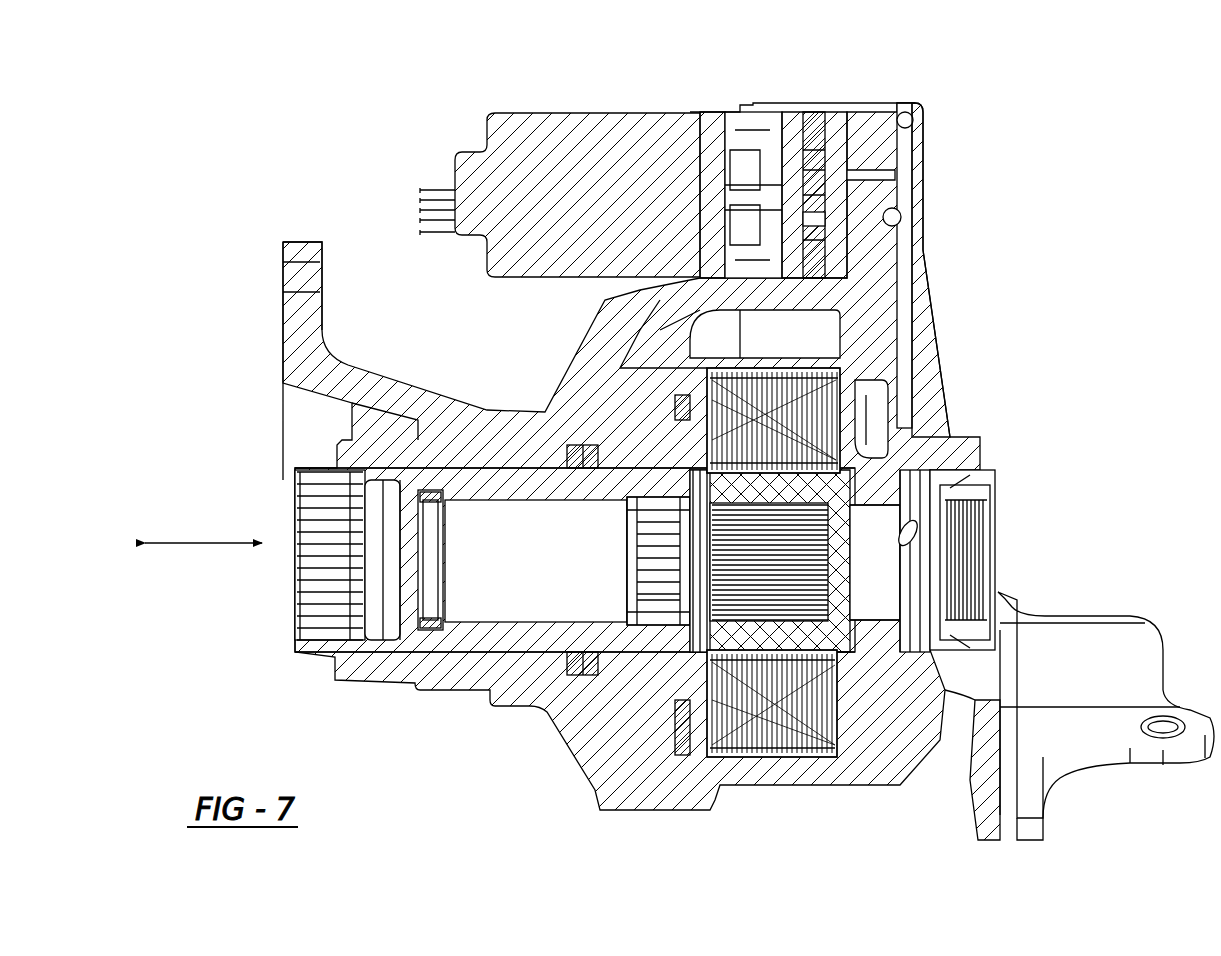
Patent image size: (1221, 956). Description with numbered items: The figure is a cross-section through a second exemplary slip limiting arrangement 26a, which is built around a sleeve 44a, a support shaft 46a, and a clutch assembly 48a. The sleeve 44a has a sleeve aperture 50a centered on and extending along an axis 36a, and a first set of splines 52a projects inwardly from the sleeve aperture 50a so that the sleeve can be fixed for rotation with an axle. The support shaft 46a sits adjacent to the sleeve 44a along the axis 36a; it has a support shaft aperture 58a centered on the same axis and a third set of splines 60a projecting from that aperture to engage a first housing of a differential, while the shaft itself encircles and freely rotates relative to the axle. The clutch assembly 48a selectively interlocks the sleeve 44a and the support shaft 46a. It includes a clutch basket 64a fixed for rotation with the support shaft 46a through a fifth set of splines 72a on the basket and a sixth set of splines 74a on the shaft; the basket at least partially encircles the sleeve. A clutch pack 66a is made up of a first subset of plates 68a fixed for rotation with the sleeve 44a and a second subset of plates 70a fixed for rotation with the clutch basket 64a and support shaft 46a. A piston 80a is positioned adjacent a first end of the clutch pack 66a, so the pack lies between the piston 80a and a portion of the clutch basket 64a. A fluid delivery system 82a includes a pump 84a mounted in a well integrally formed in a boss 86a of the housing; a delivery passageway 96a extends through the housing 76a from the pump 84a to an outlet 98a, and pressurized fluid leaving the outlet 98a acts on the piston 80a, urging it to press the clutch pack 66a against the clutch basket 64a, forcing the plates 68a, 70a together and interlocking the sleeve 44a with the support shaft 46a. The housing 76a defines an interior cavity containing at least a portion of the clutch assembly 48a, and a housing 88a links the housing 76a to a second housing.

The slip limiting arrangement 26a is at (252, 153).
The axis 36a is at (199, 545).
The sleeve 44a is at (880, 488).
The support shaft 46a is at (517, 630).
The clutch assembly 48a is at (689, 445).
The sleeve aperture 50a is at (775, 610).
The first set of splines 52a is at (735, 575).
The support shaft aperture 58a is at (326, 632).
The third set of splines 60a is at (322, 600).
The clutch basket 64a is at (700, 387).
The clutch pack 66a is at (820, 347).
The first subset of plates 68a is at (707, 497).
The second subset of plates 70a is at (637, 508).
The fifth set of splines 72a is at (715, 505).
The sixth set of splines 74a is at (700, 478).
The housing 76a is at (905, 745).
The piston 80a is at (862, 755).
The fluid delivery system 82a is at (645, 158).
The pump 84a is at (600, 175).
The boss 86a is at (870, 125).
The housing 88a is at (300, 342).
The delivery passageway 96a is at (905, 202).
The outlet 98a is at (905, 418).